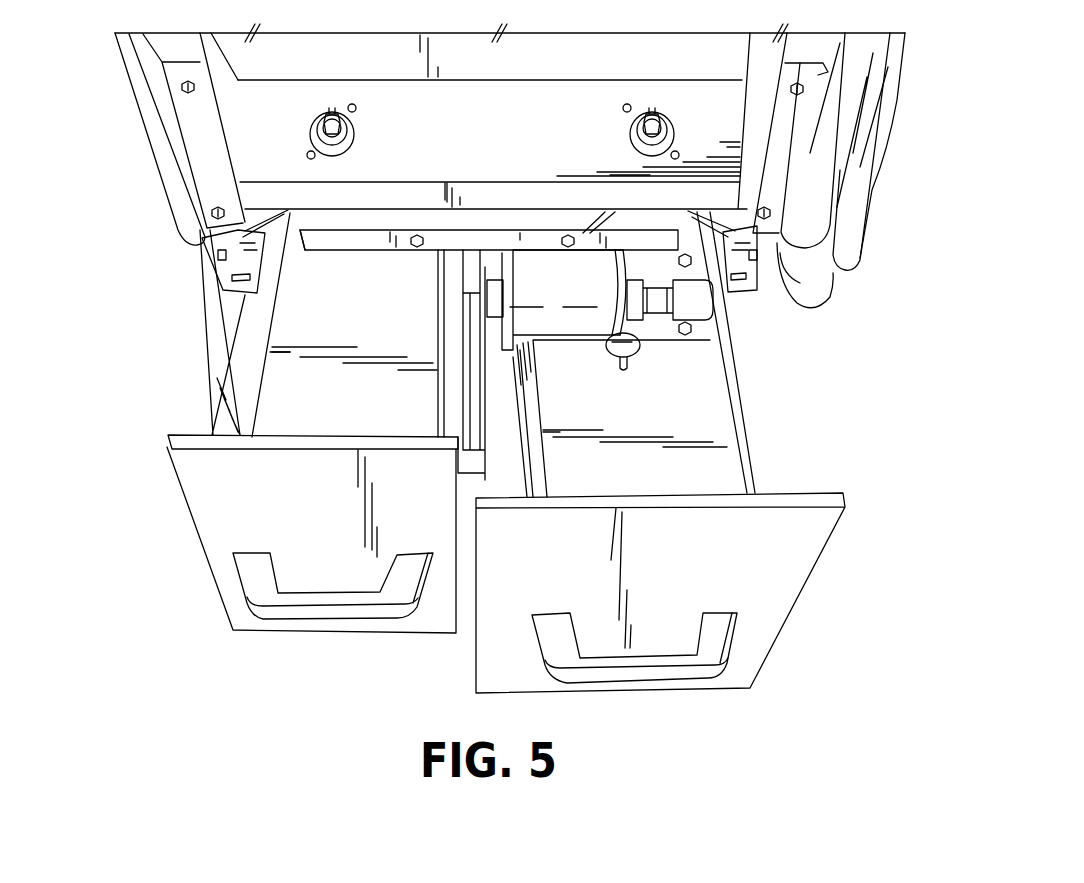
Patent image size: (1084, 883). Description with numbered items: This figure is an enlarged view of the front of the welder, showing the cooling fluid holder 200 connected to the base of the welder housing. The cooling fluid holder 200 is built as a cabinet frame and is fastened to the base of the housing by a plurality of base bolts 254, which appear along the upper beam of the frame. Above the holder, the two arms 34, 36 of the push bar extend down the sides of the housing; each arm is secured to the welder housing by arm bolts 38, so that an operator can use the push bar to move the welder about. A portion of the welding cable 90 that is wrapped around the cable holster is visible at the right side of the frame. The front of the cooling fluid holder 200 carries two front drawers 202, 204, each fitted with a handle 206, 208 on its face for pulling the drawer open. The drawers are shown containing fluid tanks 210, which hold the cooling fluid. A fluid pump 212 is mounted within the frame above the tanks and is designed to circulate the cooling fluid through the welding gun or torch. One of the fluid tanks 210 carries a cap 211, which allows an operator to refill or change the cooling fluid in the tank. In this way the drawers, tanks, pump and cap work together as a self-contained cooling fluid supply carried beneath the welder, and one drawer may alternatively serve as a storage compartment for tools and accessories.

The arm 34 is at (158, 117).
The arm 36 is at (825, 147).
The arm bolts 38 is at (771, 216).
The welding cable 90 is at (833, 290).
The cooling fluid holder 200 is at (197, 340).
The front drawer 202 is at (203, 507).
The front drawer 204 is at (788, 565).
The handle 206 is at (313, 612).
The handle 208 is at (667, 673).
The fluid tanks 210 is at (710, 428).
The cap 211 is at (642, 353).
The fluid pump 212 is at (555, 279).
The base bolts 254 is at (657, 112).